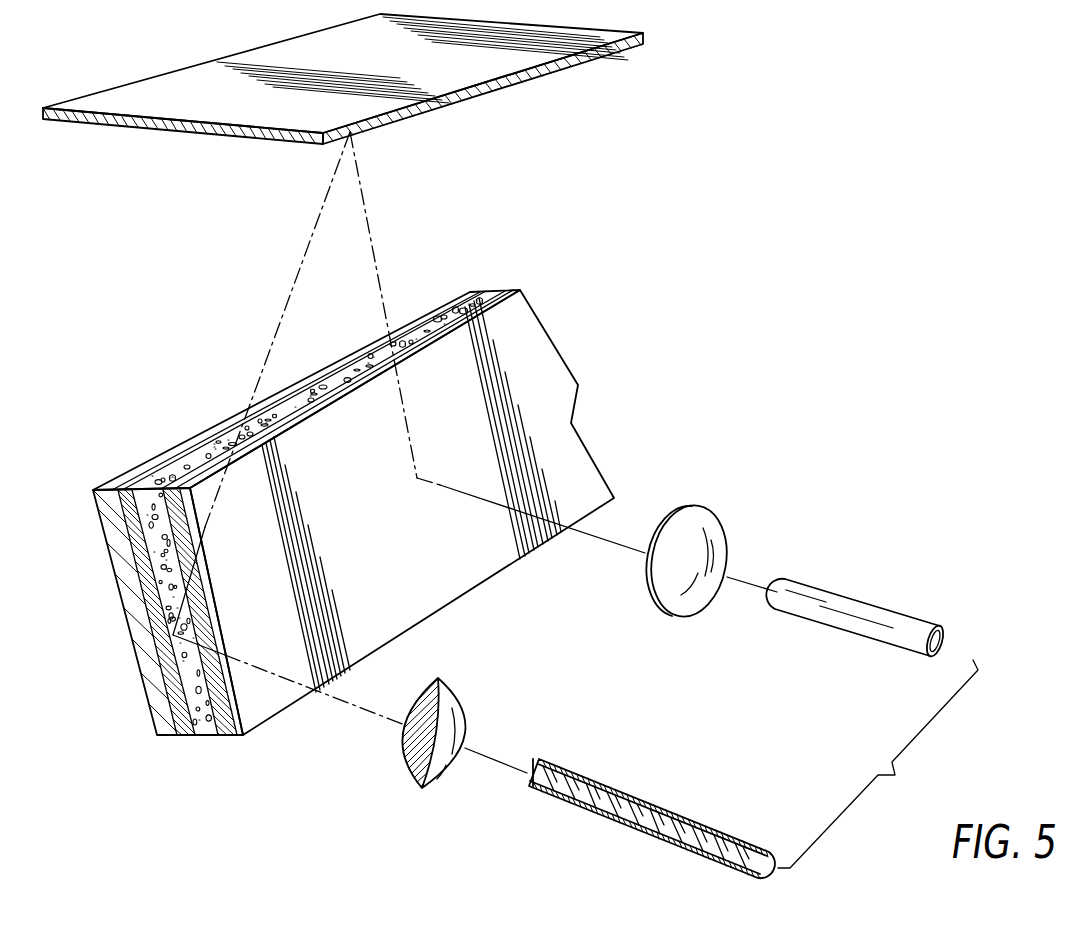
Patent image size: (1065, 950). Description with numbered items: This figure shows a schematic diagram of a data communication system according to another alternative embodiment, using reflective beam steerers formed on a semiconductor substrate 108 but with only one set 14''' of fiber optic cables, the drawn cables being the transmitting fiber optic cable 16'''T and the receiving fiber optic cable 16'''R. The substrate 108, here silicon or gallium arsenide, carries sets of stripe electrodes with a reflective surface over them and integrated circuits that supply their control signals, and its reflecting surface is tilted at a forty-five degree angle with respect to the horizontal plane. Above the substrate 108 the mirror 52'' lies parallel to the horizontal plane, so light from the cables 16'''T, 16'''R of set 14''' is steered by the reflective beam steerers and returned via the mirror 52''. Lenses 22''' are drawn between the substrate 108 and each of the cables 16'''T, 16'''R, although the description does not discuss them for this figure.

The mirror 52'' is at (343, 79).
The semiconductor substrate 108 is at (154, 459).
The lens 22''' is at (566, 643).
The fiber optic cable 16'''R is at (856, 600).
The fiber optic cable 16'''T is at (652, 819).
The set of fiber optic cables 14''' is at (878, 764).